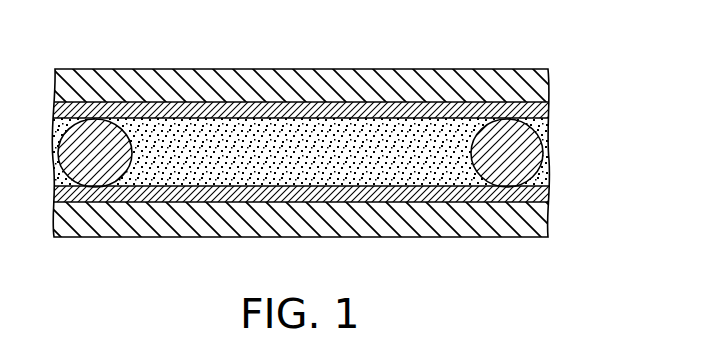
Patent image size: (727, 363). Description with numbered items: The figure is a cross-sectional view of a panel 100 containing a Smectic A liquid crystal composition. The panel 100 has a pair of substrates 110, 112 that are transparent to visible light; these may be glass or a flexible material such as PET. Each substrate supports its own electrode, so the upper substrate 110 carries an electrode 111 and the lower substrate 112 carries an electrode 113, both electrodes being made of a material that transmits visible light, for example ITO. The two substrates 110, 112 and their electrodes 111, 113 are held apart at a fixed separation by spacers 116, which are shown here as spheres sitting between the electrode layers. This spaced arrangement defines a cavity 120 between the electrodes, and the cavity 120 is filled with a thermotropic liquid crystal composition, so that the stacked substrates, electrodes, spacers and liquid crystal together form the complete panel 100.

The panel 100 is at (484, 256).
The substrate 110 is at (548, 76).
The electrode 111 is at (548, 107).
The substrate 112 is at (548, 217).
The electrode 113 is at (548, 188).
The spacers 116 is at (548, 145).
The cavity 120 is at (330, 130).